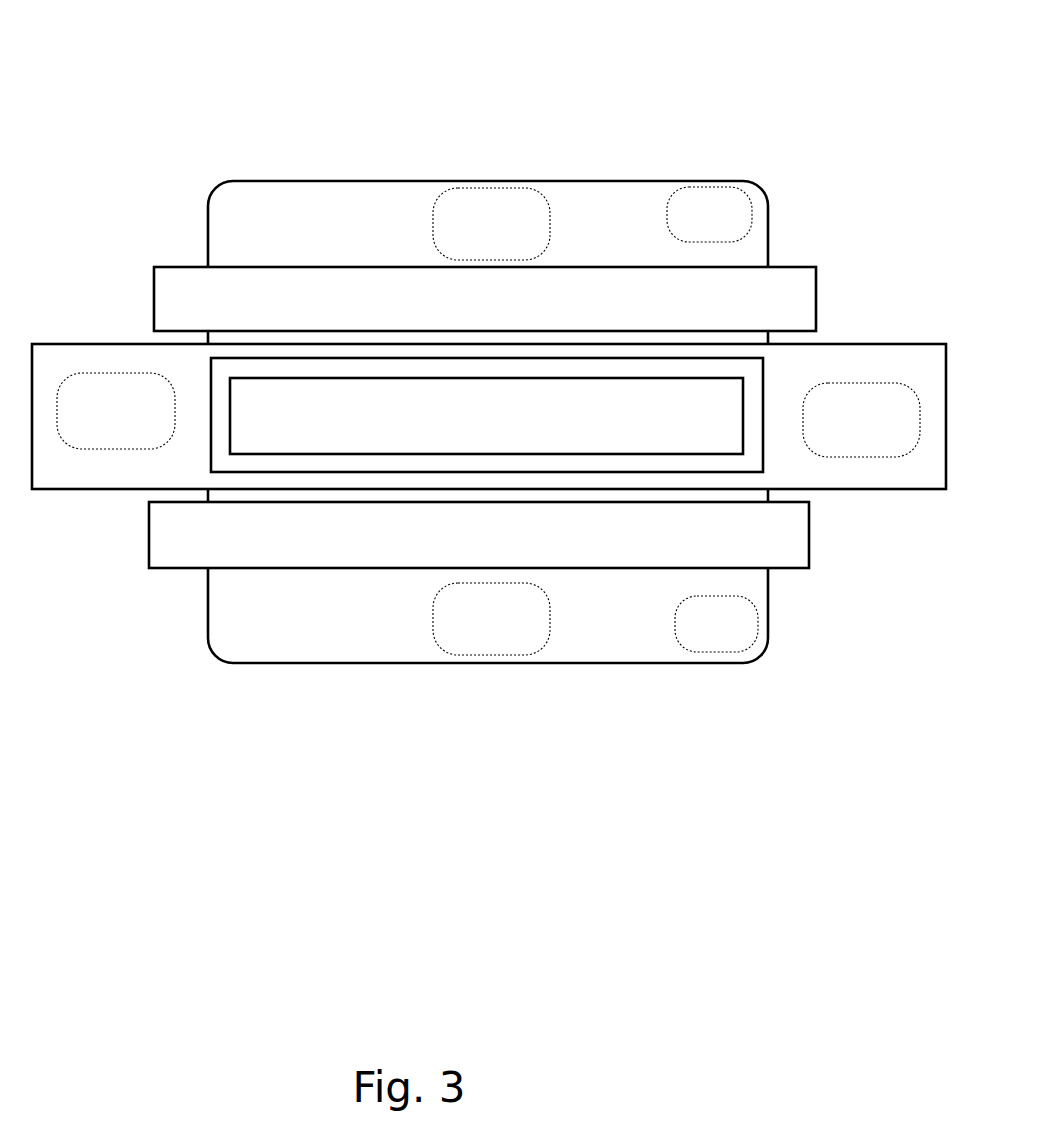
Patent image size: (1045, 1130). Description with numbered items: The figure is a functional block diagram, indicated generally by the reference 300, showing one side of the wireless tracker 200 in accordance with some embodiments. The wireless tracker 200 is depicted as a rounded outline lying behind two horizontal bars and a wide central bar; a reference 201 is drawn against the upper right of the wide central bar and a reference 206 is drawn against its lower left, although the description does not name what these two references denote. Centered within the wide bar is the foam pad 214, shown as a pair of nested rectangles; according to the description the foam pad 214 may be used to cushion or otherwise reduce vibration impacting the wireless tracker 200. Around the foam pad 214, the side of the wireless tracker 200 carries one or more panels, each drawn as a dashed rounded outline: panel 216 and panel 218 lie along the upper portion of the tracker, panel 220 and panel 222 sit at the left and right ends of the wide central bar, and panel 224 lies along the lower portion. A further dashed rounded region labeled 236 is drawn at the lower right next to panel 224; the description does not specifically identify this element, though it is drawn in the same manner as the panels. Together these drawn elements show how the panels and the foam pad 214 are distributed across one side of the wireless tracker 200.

The assembly view 300 is at (219, 88).
The wireless tracker 200 is at (768, 600).
The plate 201 is at (893, 345).
The support board 206 is at (58, 490).
The foam pad 214 is at (492, 380).
The panel 216 is at (491, 224).
The panel 218 is at (709, 214).
The panel 220 is at (116, 411).
The panel 222 is at (861, 420).
The panel 224 is at (491, 619).
The lower right region 236 is at (716, 624).